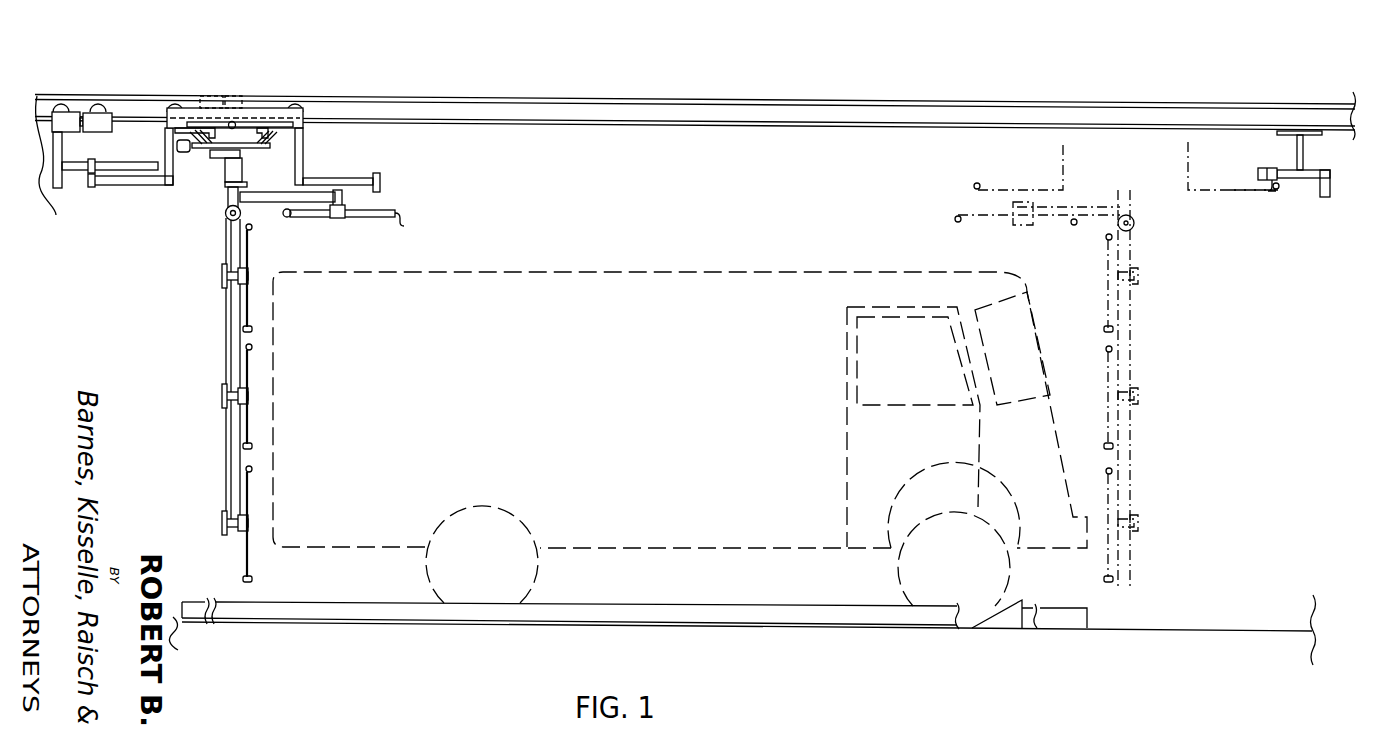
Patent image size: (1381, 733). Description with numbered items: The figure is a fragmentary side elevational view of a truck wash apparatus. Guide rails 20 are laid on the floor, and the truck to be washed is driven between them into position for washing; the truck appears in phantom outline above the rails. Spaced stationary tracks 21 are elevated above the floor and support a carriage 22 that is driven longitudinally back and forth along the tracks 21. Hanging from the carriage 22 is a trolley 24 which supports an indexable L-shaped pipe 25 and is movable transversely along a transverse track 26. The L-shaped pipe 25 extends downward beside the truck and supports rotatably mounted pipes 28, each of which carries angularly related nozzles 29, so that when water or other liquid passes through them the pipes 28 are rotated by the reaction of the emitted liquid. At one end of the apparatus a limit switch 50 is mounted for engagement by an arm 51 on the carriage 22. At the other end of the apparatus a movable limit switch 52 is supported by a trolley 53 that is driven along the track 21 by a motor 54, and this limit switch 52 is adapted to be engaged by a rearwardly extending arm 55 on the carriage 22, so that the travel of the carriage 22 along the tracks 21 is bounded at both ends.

The guide rails 20 is at (666, 621).
The stationary tracks 21 is at (537, 102).
The carriage 22 is at (270, 108).
The trolley 24 is at (213, 162).
The indexable L-shaped pipe 25 is at (227, 253).
The transverse track 26 is at (267, 157).
The rotatably mounted pipes 28 is at (250, 260).
The nozzles 29 is at (253, 224).
The limit switch 50 is at (1263, 173).
The arm 51 is at (351, 179).
The movable limit switch 52 is at (92, 163).
The trolley 53 is at (73, 118).
The motor 54 is at (112, 128).
The rearwardly extending arm 55 is at (116, 185).